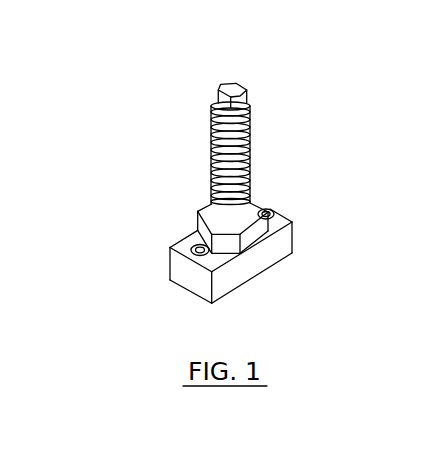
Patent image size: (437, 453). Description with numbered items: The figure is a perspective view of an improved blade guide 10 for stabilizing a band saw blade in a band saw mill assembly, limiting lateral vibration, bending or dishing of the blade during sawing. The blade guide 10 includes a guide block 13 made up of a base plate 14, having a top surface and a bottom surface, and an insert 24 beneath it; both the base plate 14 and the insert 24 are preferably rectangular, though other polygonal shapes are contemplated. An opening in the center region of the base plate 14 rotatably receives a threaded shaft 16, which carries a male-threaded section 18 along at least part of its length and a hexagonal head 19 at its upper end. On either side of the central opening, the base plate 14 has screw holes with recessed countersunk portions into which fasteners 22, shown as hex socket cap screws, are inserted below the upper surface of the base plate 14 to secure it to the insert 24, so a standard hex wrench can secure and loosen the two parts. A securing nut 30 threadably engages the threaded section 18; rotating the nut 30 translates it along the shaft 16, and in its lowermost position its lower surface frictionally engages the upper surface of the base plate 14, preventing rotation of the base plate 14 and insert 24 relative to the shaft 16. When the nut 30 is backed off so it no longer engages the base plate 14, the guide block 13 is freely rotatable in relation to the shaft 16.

The blade guide 10 is at (160, 176).
The guide block 13 is at (156, 252).
The base plate 14 is at (184, 237).
The threaded shaft 16 is at (266, 139).
The male-threaded section 18 is at (212, 128).
The hexagonal head 19 is at (244, 82).
The fasteners 22 is at (270, 209).
The insert 24 is at (281, 258).
The securing nut 30 is at (258, 237).